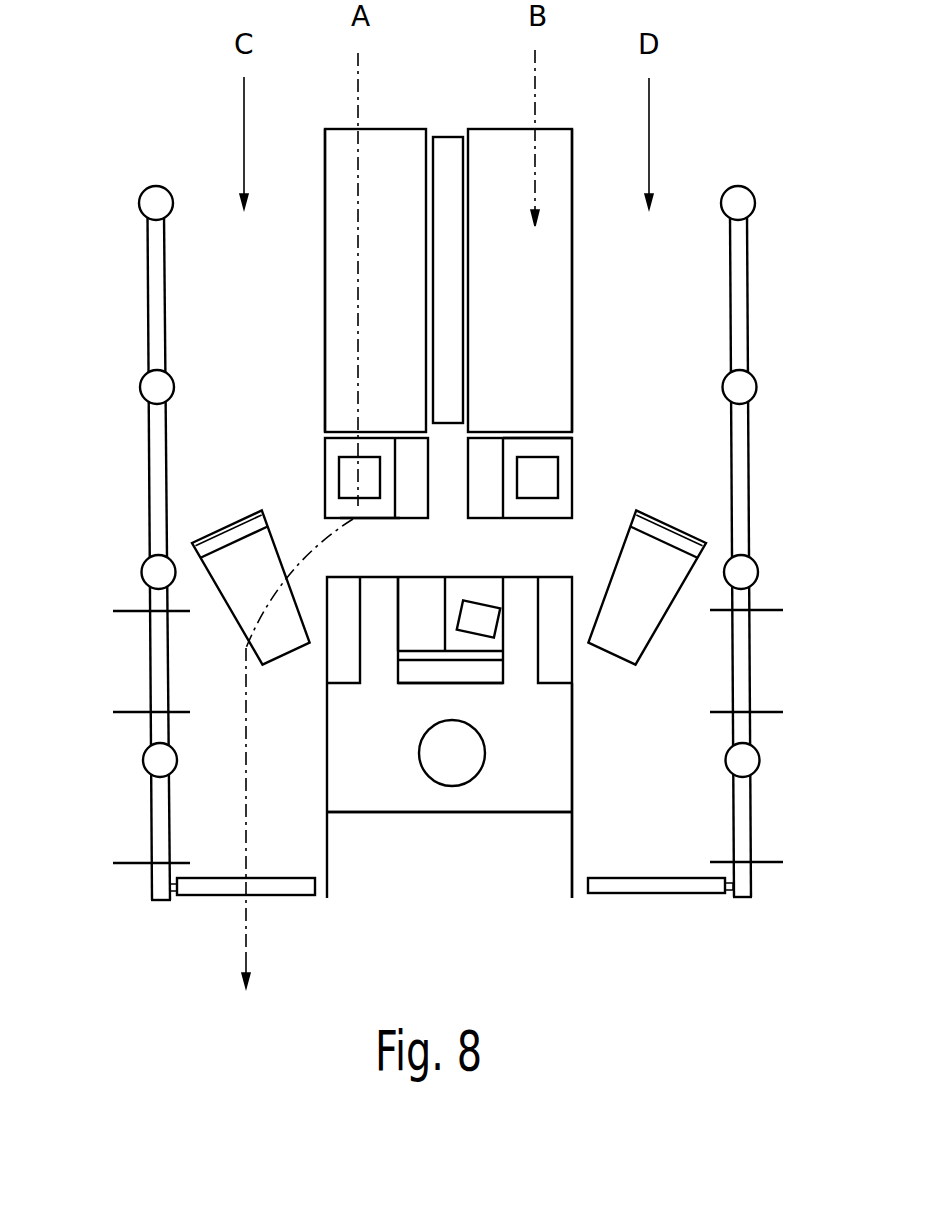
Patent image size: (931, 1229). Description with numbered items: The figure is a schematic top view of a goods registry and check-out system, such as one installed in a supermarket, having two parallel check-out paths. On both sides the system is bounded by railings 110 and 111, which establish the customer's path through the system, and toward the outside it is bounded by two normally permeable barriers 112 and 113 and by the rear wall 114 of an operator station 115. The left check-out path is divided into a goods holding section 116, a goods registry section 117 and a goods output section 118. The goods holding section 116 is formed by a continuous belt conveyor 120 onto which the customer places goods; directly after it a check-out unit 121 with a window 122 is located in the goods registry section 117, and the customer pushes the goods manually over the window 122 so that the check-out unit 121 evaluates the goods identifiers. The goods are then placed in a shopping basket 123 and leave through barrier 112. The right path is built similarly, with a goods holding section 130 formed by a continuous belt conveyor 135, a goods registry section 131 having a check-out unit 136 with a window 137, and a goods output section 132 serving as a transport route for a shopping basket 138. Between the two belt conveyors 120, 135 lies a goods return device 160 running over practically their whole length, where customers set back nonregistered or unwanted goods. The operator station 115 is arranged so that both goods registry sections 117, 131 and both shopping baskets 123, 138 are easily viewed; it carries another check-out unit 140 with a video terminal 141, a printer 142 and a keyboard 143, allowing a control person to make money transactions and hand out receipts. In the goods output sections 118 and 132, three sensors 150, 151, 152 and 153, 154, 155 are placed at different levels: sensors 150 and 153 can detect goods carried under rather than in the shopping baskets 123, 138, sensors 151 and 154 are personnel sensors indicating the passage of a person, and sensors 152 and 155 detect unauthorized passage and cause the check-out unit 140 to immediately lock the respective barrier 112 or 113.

The railing 110 is at (148, 284).
The railing 111 is at (752, 284).
The barrier 112 is at (293, 889).
The barrier 113 is at (642, 891).
The rear wall 114 is at (458, 813).
The operator station 115 is at (497, 753).
The goods holding section 116 is at (409, 302).
The goods registry section 117 is at (370, 506).
The goods output section 118 is at (303, 782).
The continuous belt conveyor 120 is at (328, 266).
The check-out unit 121 is at (330, 505).
The window 122 is at (343, 470).
The shopping basket 123 is at (228, 599).
The goods holding section 130 is at (541, 302).
The goods registry section 131 is at (533, 506).
The goods output section 132 is at (661, 741).
The continuous belt conveyor 135 is at (572, 264).
The check-out unit 136 is at (565, 448).
The window 137 is at (552, 483).
The shopping basket 138 is at (653, 625).
The check-out unit 140 is at (397, 668).
The video terminal 141 is at (491, 618).
The printer 142 is at (410, 603).
The keyboard 143 is at (482, 676).
The sensor 150 is at (122, 611).
The sensor 151 is at (122, 712).
The sensor 152 is at (127, 863).
The sensor 153 is at (775, 602).
The sensor 154 is at (775, 706).
The sensor 155 is at (777, 856).
The goods return device 160 is at (448, 145).